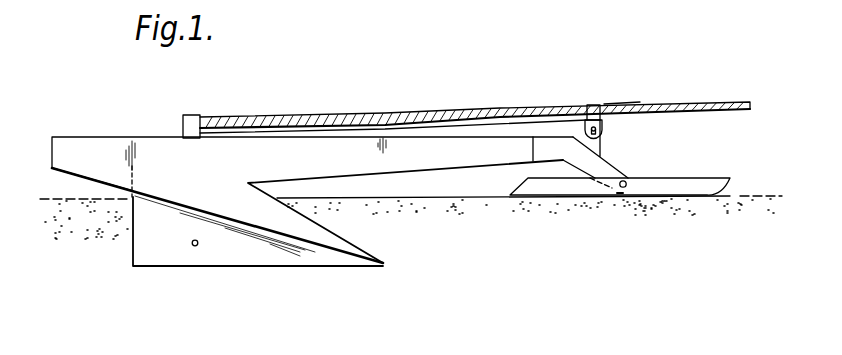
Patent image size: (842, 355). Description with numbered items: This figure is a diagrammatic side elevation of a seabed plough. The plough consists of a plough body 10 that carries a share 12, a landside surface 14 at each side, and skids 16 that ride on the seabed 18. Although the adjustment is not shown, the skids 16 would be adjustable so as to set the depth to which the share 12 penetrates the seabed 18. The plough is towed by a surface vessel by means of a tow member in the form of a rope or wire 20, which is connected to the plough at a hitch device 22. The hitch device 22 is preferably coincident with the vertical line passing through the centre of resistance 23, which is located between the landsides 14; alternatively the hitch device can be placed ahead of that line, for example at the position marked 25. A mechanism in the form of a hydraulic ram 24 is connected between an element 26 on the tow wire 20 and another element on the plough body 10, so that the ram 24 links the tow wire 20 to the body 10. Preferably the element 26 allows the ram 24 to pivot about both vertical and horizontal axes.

The plough body 10 is at (420, 147).
The share 12 is at (378, 253).
The landside surface 14 is at (216, 256).
The skids 16 is at (668, 186).
The seabed 18 is at (738, 196).
The tow wire 20 is at (702, 101).
The hitch device 22 is at (186, 115).
The centre of resistance 23 is at (191, 247).
The hydraulic ram 24 is at (619, 108).
The alternative hitch position 25 is at (349, 127).
The element on the tow wire 26 is at (597, 103).